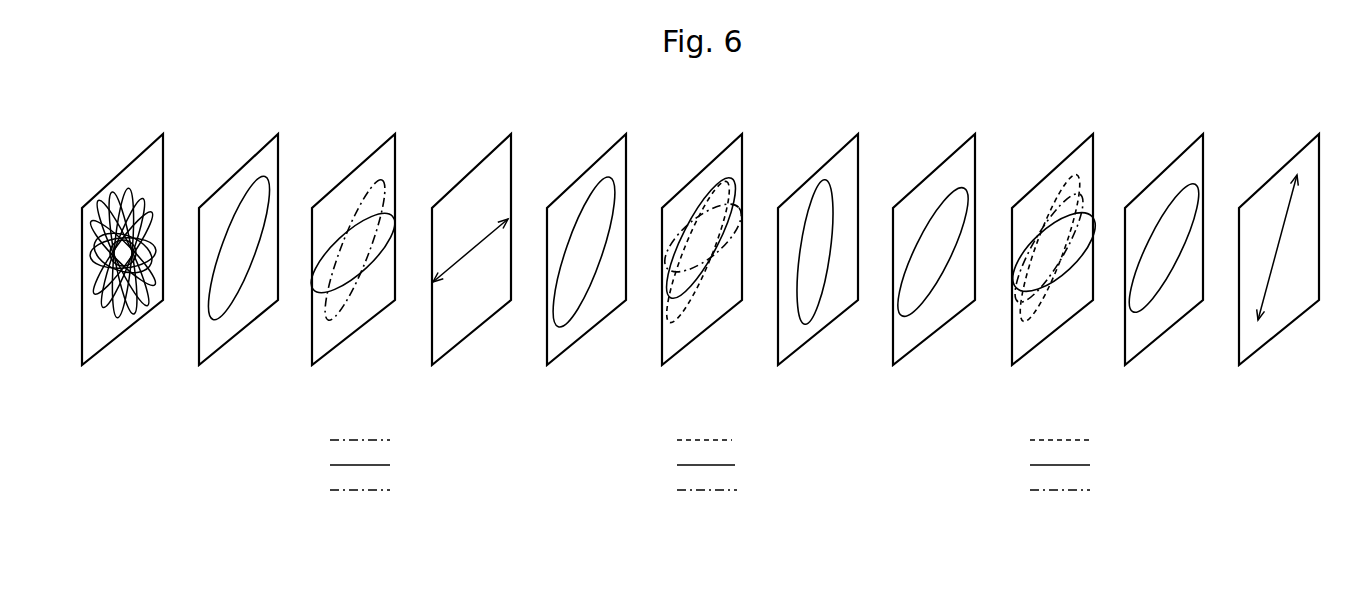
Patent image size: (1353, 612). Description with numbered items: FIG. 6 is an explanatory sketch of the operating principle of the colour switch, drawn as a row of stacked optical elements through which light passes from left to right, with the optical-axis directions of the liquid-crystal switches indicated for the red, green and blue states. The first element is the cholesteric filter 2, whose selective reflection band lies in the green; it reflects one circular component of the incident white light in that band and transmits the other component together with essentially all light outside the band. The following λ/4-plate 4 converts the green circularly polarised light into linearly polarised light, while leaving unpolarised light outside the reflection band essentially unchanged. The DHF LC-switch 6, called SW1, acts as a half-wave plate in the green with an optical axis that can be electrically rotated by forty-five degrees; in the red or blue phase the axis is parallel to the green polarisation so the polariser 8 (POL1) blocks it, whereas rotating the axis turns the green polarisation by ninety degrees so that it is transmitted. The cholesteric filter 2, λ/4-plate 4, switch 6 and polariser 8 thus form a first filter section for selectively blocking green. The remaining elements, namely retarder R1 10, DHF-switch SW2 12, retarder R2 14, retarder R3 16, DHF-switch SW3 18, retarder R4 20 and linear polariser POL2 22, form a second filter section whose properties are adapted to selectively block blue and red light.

The cholesteric filter 2 is at (114, 537).
The λ/4-plate 4 is at (226, 537).
The DHF LC-switch SW1 6 is at (351, 537).
The polariser POL1 8 is at (469, 537).
The retarder R1 10 is at (590, 537).
The DHF-switch SW2 12 is at (708, 537).
The retarder R2 14 is at (823, 537).
The retarder R3 16 is at (940, 537).
The DHF-switch SW3 18 is at (1060, 537).
The retarder R4 20 is at (1172, 537).
The polariser POL2 22 is at (1291, 537).